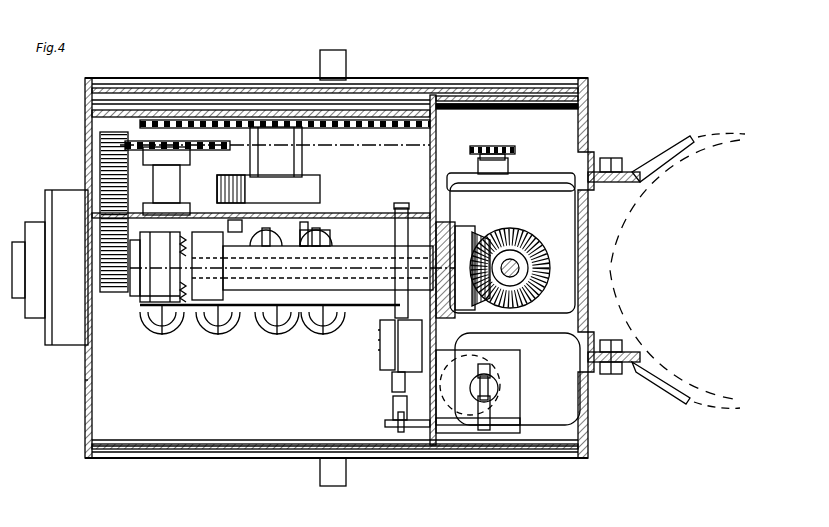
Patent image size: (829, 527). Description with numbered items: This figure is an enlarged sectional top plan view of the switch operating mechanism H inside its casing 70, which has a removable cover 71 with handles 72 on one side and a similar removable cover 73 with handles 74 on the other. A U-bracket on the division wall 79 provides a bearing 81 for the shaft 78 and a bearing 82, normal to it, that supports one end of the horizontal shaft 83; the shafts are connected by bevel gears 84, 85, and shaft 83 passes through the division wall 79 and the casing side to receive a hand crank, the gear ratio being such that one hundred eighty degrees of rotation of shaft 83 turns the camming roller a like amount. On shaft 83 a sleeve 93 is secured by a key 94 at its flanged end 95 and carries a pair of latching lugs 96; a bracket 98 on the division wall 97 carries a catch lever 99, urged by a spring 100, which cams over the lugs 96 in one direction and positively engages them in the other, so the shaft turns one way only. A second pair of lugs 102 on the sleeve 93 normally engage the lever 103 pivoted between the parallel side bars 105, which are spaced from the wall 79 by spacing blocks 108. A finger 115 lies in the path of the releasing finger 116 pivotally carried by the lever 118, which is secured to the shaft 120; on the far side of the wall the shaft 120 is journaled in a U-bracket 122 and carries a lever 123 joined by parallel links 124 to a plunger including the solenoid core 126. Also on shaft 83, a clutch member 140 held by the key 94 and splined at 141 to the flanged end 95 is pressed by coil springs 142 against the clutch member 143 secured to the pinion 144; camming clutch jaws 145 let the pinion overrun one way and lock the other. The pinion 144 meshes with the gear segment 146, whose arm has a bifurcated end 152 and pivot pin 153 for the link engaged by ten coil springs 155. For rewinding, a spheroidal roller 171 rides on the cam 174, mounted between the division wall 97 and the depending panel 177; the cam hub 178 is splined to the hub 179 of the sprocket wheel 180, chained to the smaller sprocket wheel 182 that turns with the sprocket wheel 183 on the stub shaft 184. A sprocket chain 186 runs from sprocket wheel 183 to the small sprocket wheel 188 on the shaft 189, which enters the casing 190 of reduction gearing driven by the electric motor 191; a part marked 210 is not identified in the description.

The casing 70 is at (86, 392).
The removable cover 71 is at (412, 460).
The handles 72 is at (333, 486).
The removable cover 73 is at (380, 90).
The handles 74 is at (346, 60).
The shaft 78 is at (520, 275).
The division wall 79 is at (430, 133).
The bearing 81 is at (528, 228).
The bearing 82 is at (465, 240).
The shaft 83 is at (330, 292).
The bevel gear 84 is at (512, 228).
The bevel gear 85 is at (484, 250).
The sleeve 93 is at (345, 246).
The key 94 is at (207, 265).
The flanged end 95 is at (228, 226).
The latching lugs 96 is at (345, 272).
The division wall 97 is at (402, 205).
The bracket 98 is at (230, 213).
The catch lever 99 is at (290, 240).
The spring 100 is at (336, 220).
The lugs 102 is at (395, 222).
The lever 103 is at (380, 335).
The side bars 105 is at (392, 380).
The spacing blocks 108 is at (422, 340).
The finger 115 is at (393, 398).
The releasing finger 116 is at (393, 412).
The lever 118 is at (401, 432).
The shaft 120 is at (460, 420).
The U-bracket 122 is at (478, 362).
The lever 123 is at (490, 412).
The parallel links 124 is at (490, 372).
The solenoid core 126 is at (470, 388).
The clutch member 140 is at (160, 302).
The splines 141 is at (170, 305).
The coil springs 142 is at (186, 236).
The clutch member 143 is at (135, 238).
The pinion 144 is at (108, 300).
The camming clutch jaws 145 is at (150, 302).
The gear segment 146 is at (100, 143).
The bifurcated end 152 is at (245, 325).
The pivot pin 153 is at (292, 325).
The coil springs 155 is at (355, 215).
The spheroidal roller 171 is at (310, 236).
The cam 174 is at (250, 190).
The depending panel 177 is at (405, 112).
The hub 178 is at (262, 157).
The hub 179 is at (240, 132).
The sprocket wheel 180 is at (242, 120).
The sprocket wheel 182 is at (160, 120).
The sprocket wheel 183 is at (148, 145).
The stub shaft 184 is at (666, 270).
The sprocket chain 186 is at (480, 96).
The sprocket wheel 188 is at (505, 148).
The shaft 189 is at (508, 162).
The casing 190 is at (540, 186).
The electric motor 191 is at (565, 412).
The center line 210 is at (325, 158).
The switch operating mechanism H is at (70, 378).